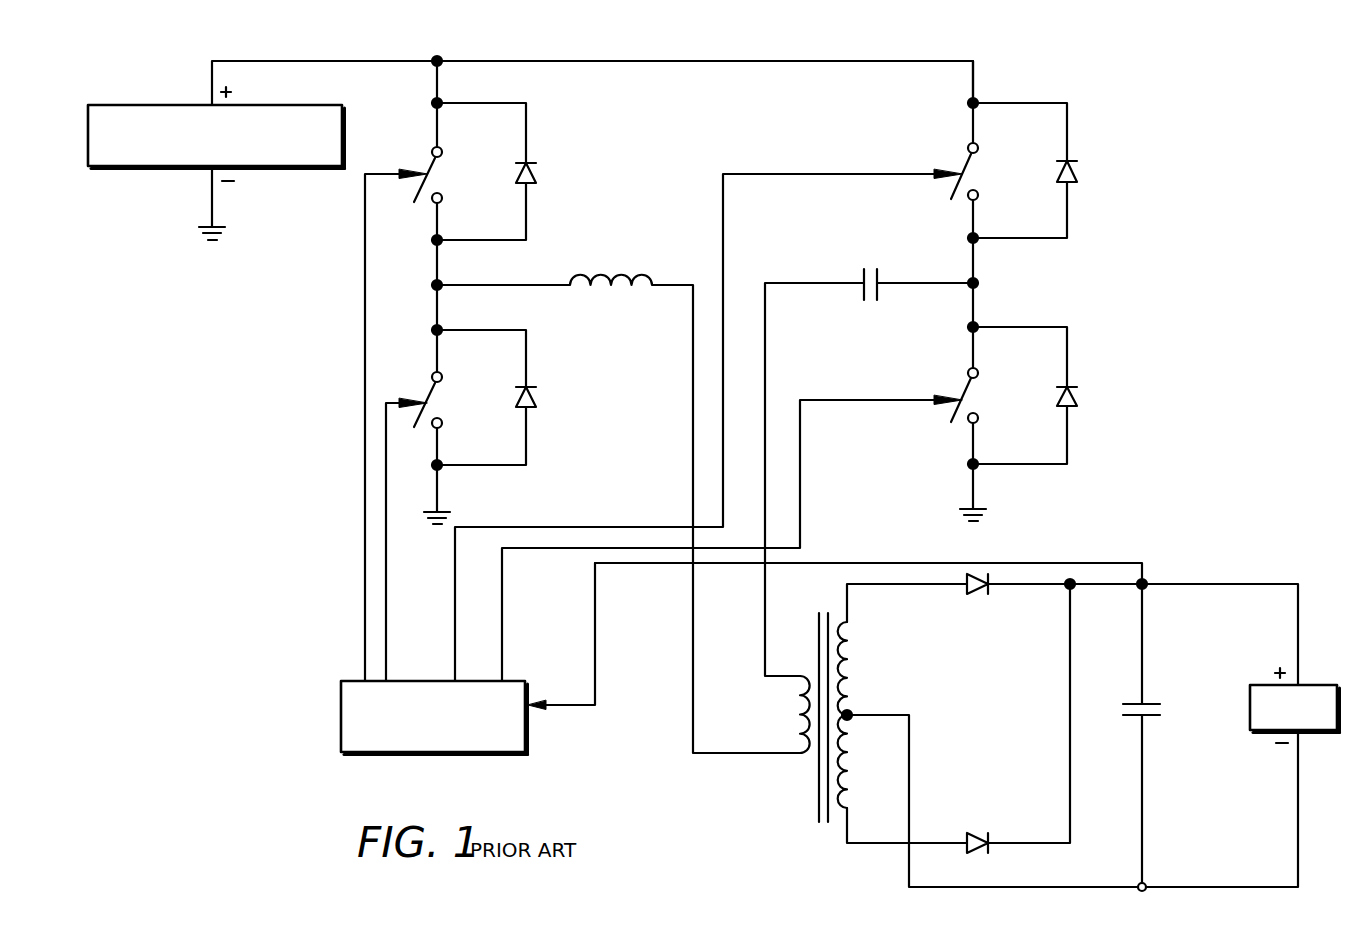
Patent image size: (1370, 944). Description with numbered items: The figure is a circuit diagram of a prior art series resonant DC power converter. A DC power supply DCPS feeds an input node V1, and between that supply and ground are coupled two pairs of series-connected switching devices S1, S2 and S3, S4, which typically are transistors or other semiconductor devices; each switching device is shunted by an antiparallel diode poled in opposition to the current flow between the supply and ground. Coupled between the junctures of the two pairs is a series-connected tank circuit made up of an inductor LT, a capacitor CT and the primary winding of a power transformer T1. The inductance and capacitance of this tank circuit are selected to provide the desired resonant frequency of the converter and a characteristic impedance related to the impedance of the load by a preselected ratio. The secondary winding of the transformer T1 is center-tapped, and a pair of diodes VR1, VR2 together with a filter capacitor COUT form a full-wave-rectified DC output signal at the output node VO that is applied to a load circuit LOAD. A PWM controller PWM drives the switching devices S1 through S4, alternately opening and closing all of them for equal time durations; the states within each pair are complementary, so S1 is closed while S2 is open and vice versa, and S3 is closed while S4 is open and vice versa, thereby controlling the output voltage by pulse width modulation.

The DC power supply DCPS is at (530, 150).
The input voltage node V1 is at (437, 58).
The switching device S1 is at (450, 371).
The switching device S2 is at (461, 503).
The switching device S3 is at (766, 371).
The switching device S4 is at (789, 501).
The inductor LT is at (616, 496).
The capacitor CT is at (871, 457).
The PWM controller PWM is at (468, 659).
The power transformer T1 is at (971, 750).
The diode VR1 is at (994, 599).
The diode VR2 is at (958, 718).
The output voltage node VO is at (1142, 581).
The filter capacitor COUT is at (1160, 737).
The load circuit LOAD is at (1241, 735).